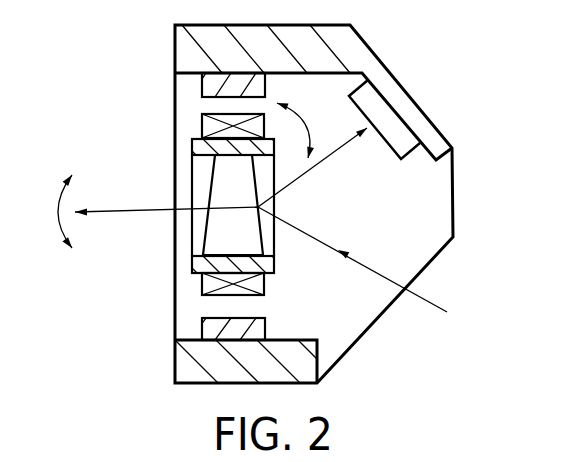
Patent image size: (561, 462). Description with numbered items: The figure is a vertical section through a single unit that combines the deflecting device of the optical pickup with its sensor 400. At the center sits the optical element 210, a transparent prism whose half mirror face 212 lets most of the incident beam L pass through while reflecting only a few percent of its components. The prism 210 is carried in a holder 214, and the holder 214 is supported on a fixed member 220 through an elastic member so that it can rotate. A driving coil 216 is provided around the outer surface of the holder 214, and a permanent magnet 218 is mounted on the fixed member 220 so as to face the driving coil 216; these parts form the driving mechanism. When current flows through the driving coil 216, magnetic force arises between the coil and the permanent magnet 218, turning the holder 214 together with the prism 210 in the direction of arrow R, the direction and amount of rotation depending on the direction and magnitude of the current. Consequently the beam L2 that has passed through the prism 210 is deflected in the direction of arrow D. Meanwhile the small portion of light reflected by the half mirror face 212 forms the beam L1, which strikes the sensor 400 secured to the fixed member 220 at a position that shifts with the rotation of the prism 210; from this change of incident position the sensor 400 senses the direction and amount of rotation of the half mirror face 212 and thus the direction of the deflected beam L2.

The optical element 210 is at (207, 232).
The half mirror face 212 is at (274, 248).
The holder 214 is at (192, 150).
The driving coil 216 is at (202, 119).
The permanent magnet 218 is at (202, 85).
The fixed member 220 is at (182, 362).
The sensor 400 is at (399, 158).
The incident beam L is at (427, 300).
The reflected beam L1 is at (335, 152).
The deflected beam L2 is at (108, 217).
The direction of rotation R is at (302, 128).
The direction of deflection D is at (57, 211).